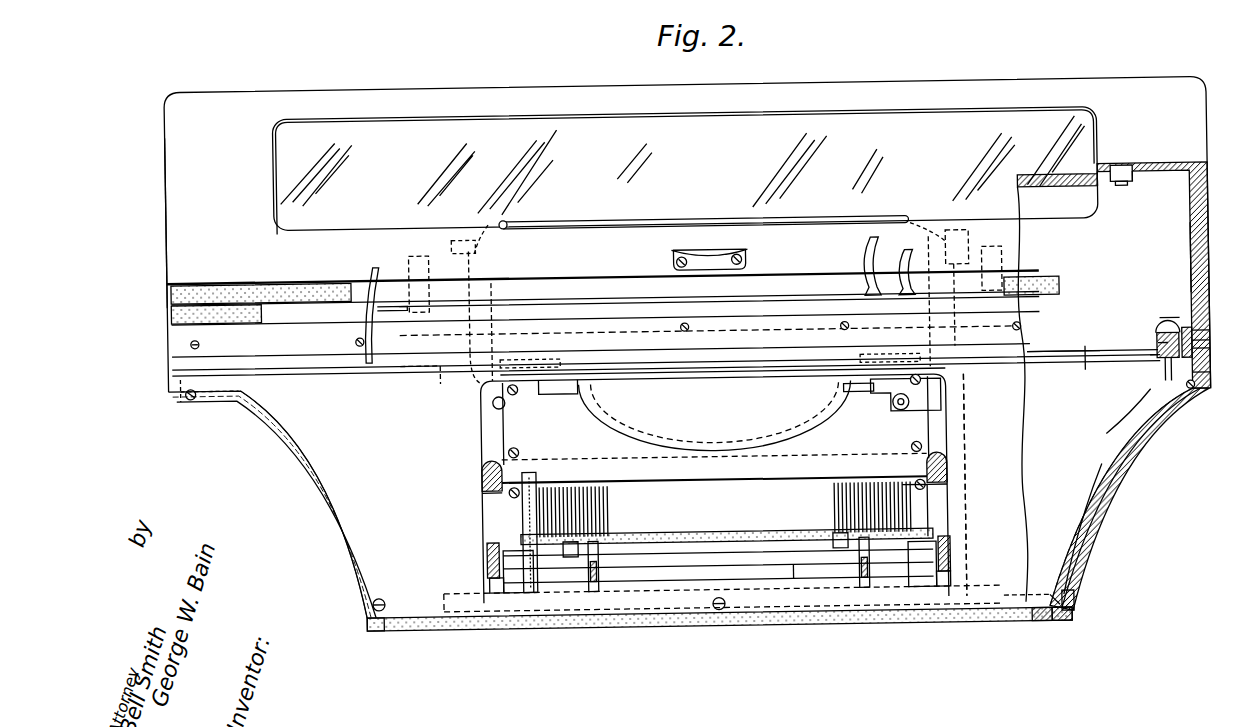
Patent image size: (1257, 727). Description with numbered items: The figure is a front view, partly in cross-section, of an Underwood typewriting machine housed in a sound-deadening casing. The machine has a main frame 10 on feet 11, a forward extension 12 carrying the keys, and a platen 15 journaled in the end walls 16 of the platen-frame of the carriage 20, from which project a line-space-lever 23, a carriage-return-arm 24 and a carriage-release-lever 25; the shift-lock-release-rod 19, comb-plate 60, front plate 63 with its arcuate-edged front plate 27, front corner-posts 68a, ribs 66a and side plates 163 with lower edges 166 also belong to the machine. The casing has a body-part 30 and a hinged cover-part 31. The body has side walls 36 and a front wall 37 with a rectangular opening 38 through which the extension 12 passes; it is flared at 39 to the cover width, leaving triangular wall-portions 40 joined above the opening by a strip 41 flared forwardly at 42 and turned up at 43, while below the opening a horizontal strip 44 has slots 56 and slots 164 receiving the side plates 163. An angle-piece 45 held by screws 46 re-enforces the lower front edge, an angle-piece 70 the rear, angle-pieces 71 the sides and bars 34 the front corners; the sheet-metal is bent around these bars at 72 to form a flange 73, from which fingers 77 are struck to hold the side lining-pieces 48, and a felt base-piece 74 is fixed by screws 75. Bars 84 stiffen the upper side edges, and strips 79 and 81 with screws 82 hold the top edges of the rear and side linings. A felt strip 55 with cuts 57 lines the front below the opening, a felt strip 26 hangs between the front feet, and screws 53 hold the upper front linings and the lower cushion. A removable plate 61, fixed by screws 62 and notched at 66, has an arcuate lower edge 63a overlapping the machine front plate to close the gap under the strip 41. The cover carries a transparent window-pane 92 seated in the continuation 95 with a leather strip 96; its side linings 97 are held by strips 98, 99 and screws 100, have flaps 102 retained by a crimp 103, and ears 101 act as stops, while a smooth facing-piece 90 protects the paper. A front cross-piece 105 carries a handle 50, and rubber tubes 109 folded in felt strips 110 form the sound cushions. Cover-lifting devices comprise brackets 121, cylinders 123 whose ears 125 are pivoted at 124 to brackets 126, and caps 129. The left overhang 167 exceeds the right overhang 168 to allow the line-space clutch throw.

The main frame 10 is at (963, 440).
The feet 11 is at (462, 578).
The forward extension 12 is at (482, 470).
The platen 15 is at (680, 250).
The end walls 16 is at (703, 227).
The shift-lock-release-rod 19 is at (500, 531).
The carriage 20 is at (975, 262).
The line-space-lever 23 is at (368, 270).
The carriage-return-arm 24 is at (868, 247).
The carriage-release-lever 25 is at (906, 266).
The sound-deadening lining-strip 26 is at (760, 542).
The front plate 27 is at (711, 450).
The body-part 30 is at (284, 437).
The cover-part 31 is at (1220, 164).
The bars 34 is at (348, 545).
The side walls 36 is at (1138, 455).
The front wall 37 is at (1024, 500).
The rectangular opening 38 is at (480, 392).
The flared portion 39 is at (1102, 476).
The wall-portion 40 is at (655, 489).
The strip 41 is at (655, 378).
The flared portion 42 is at (790, 372).
The vertical upward portion 43 is at (756, 331).
The horizontal strip 44 is at (718, 571).
The angle-piece 45 is at (795, 590).
The screws 46 is at (186, 393).
The lining-pieces 48 is at (1112, 458).
The handle 50 is at (750, 251).
The screws 53 is at (199, 337).
The strip of felt 55 is at (668, 532).
The slots 56 is at (584, 571).
The slots or cuts 57 is at (596, 571).
The comb-plate 60 is at (925, 528).
The plate 61 is at (800, 428).
The screws 62 is at (515, 392).
The front plate 63 is at (690, 480).
The arcuate lower edge 63a is at (645, 457).
The notches 66 is at (498, 360).
The ribs 66a is at (540, 358).
The front corner-posts 68a is at (478, 486).
The angle-piece 70 is at (1022, 603).
The angle-pieces 71 is at (1071, 606).
The bent portion 72 is at (1035, 626).
The flange 73 is at (1058, 626).
The base-piece 74 is at (855, 628).
The screws 75 is at (385, 622).
The fingers 77 is at (1050, 598).
The metal strip 79 is at (1052, 368).
The strips of metal 81 is at (1198, 380).
The screws 82 is at (1168, 370).
The bars 84 is at (184, 386).
The facing-piece 90 is at (1093, 366).
The window-pane 92 is at (685, 171).
The cover continuation 95 is at (168, 157).
The strip of leather 96 is at (1120, 190).
The sound-deadening linings 97 is at (1192, 234).
The metal strips 98 is at (1184, 334).
The strips 99 is at (1202, 338).
The screws 100 is at (1158, 338).
The ears 101 is at (1200, 348).
The ears or flaps 102 is at (1138, 190).
The crimp or flange 103 is at (1121, 202).
The front cross-piece 105 is at (168, 270).
The tubes 109 is at (280, 317).
The strip of flexible material 110 is at (278, 284).
The bracket 121 is at (1192, 295).
The cylinders 123 is at (1081, 370).
The pivot 124 is at (1154, 367).
The ears 125 is at (1200, 356).
The brackets 126 is at (1138, 420).
The caps 129 is at (1162, 326).
The side plates 163 is at (482, 552).
The slots 164 is at (498, 590).
The lower edges 166 is at (492, 592).
The offset or overhang 167 is at (222, 394).
The offset or overhang 168 is at (1205, 392).